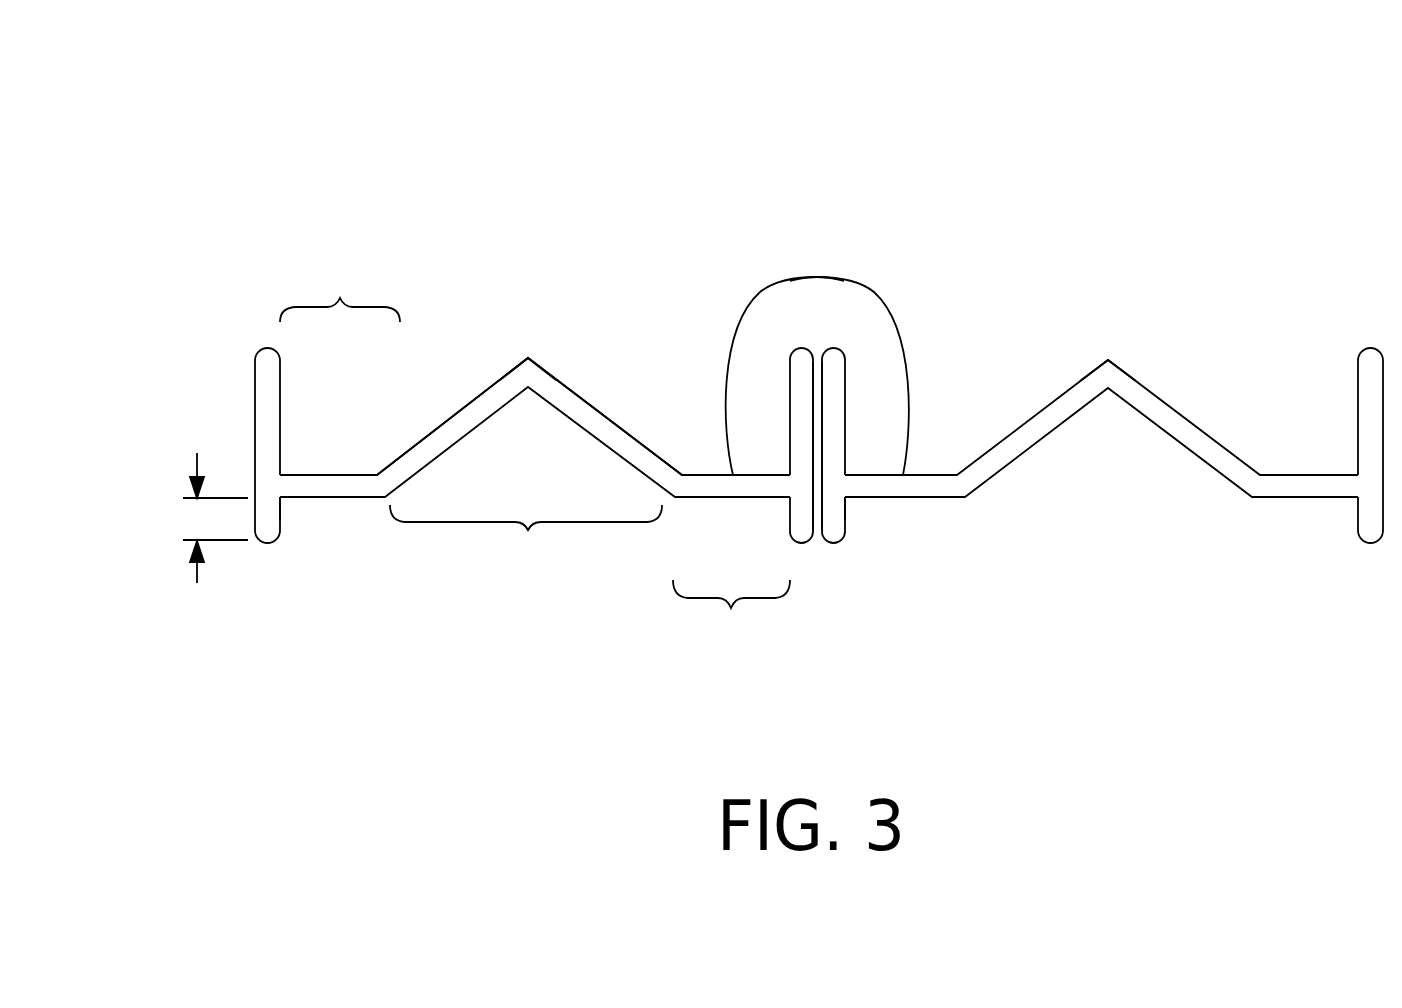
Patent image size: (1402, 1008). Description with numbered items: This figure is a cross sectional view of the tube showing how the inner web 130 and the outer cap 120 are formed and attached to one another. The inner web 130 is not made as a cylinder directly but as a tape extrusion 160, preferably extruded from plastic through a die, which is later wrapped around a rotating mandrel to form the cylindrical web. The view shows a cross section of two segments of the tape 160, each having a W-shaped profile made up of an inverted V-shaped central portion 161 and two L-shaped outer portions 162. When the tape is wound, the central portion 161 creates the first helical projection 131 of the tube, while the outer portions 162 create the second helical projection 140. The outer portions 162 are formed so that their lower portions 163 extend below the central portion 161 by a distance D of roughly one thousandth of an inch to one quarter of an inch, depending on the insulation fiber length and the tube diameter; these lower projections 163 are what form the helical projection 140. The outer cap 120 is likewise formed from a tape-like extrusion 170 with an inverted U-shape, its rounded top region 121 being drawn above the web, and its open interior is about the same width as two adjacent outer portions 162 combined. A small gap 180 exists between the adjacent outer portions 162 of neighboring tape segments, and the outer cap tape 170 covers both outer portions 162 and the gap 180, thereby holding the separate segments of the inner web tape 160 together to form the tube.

The outer cap 120 is at (862, 330).
The top of loop portion 121 is at (806, 248).
The inner web 130 is at (590, 418).
The first helical projection 131 is at (488, 360).
The helical projection 140 is at (269, 575).
The tape extrusion 160 is at (439, 672).
The central portion 161 is at (526, 540).
The outer portions 162 is at (535, 455).
The lower portions 163 is at (279, 530).
The outer cap tape 170 is at (960, 350).
The gap 180 is at (808, 325).
The distance D is at (197, 583).